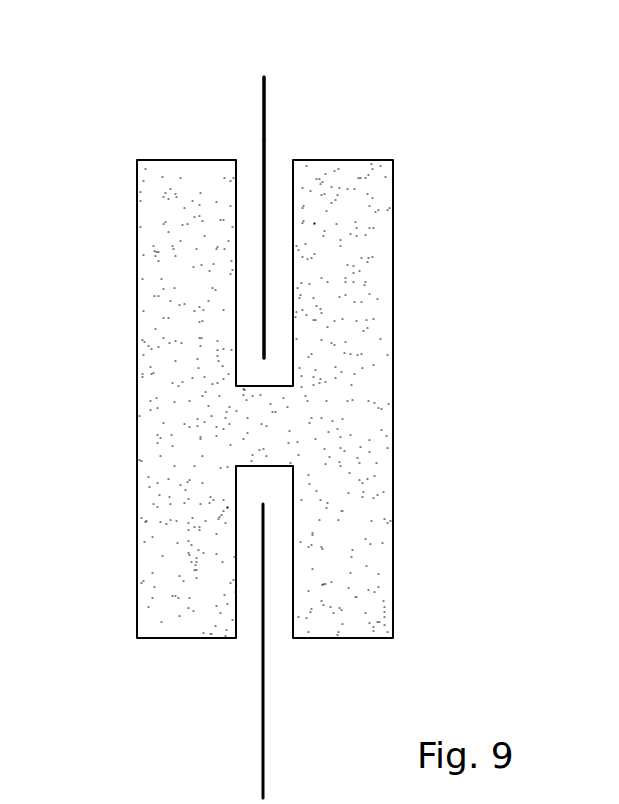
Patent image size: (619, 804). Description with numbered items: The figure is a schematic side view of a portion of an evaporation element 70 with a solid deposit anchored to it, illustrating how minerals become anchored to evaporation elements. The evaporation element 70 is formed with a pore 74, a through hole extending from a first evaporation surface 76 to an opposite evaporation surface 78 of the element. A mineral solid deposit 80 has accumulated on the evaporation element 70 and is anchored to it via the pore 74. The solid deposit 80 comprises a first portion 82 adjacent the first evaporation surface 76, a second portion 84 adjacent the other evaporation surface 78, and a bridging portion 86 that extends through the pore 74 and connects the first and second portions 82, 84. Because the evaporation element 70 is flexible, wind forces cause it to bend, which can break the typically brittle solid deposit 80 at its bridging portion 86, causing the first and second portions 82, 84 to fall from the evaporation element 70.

The evaporation element 70 is at (280, 123).
The pore 74 is at (270, 375).
The first evaporation surface 76 is at (262, 134).
The opposite evaporation surface 78 is at (265, 153).
The mineral solid deposit 80 is at (463, 231).
The first portion 82 is at (178, 272).
The second portion 84 is at (336, 288).
The bridging portion 86 is at (277, 442).